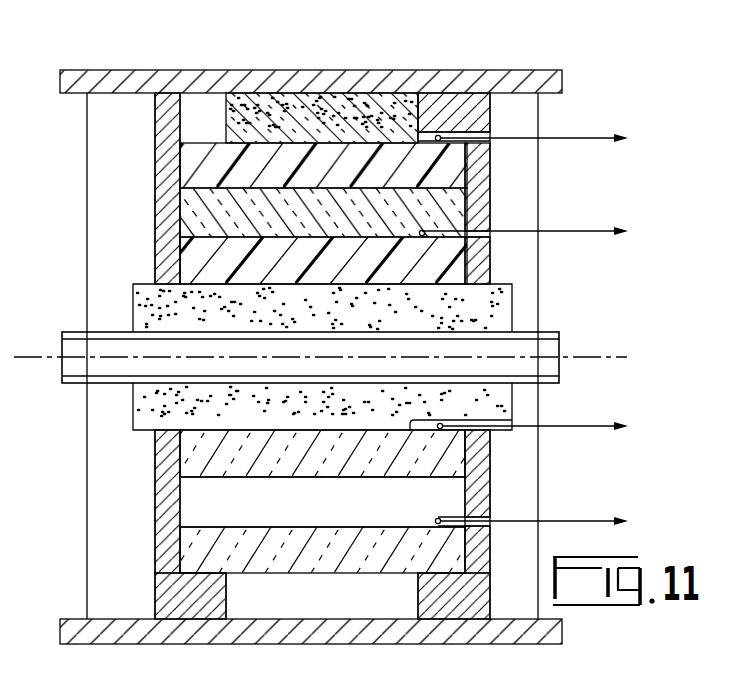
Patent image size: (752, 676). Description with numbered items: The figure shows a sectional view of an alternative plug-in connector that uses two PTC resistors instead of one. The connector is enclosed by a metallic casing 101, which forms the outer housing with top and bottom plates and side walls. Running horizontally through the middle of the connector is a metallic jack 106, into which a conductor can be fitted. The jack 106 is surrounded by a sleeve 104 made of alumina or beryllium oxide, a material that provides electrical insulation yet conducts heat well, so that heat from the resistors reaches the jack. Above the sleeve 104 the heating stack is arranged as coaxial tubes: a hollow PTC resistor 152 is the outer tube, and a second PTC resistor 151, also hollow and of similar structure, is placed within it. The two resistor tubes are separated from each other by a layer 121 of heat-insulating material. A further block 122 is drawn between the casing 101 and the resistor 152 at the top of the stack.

The metallic casing 101 is at (494, 80).
The insulating block 122 is at (407, 118).
The hollow PTC resistor 152 is at (448, 170).
The layer of heat-insulating material 121 is at (452, 207).
The second PTC resistor 151 is at (452, 265).
The sleeve 104 is at (507, 303).
The metallic jack 106 is at (545, 350).